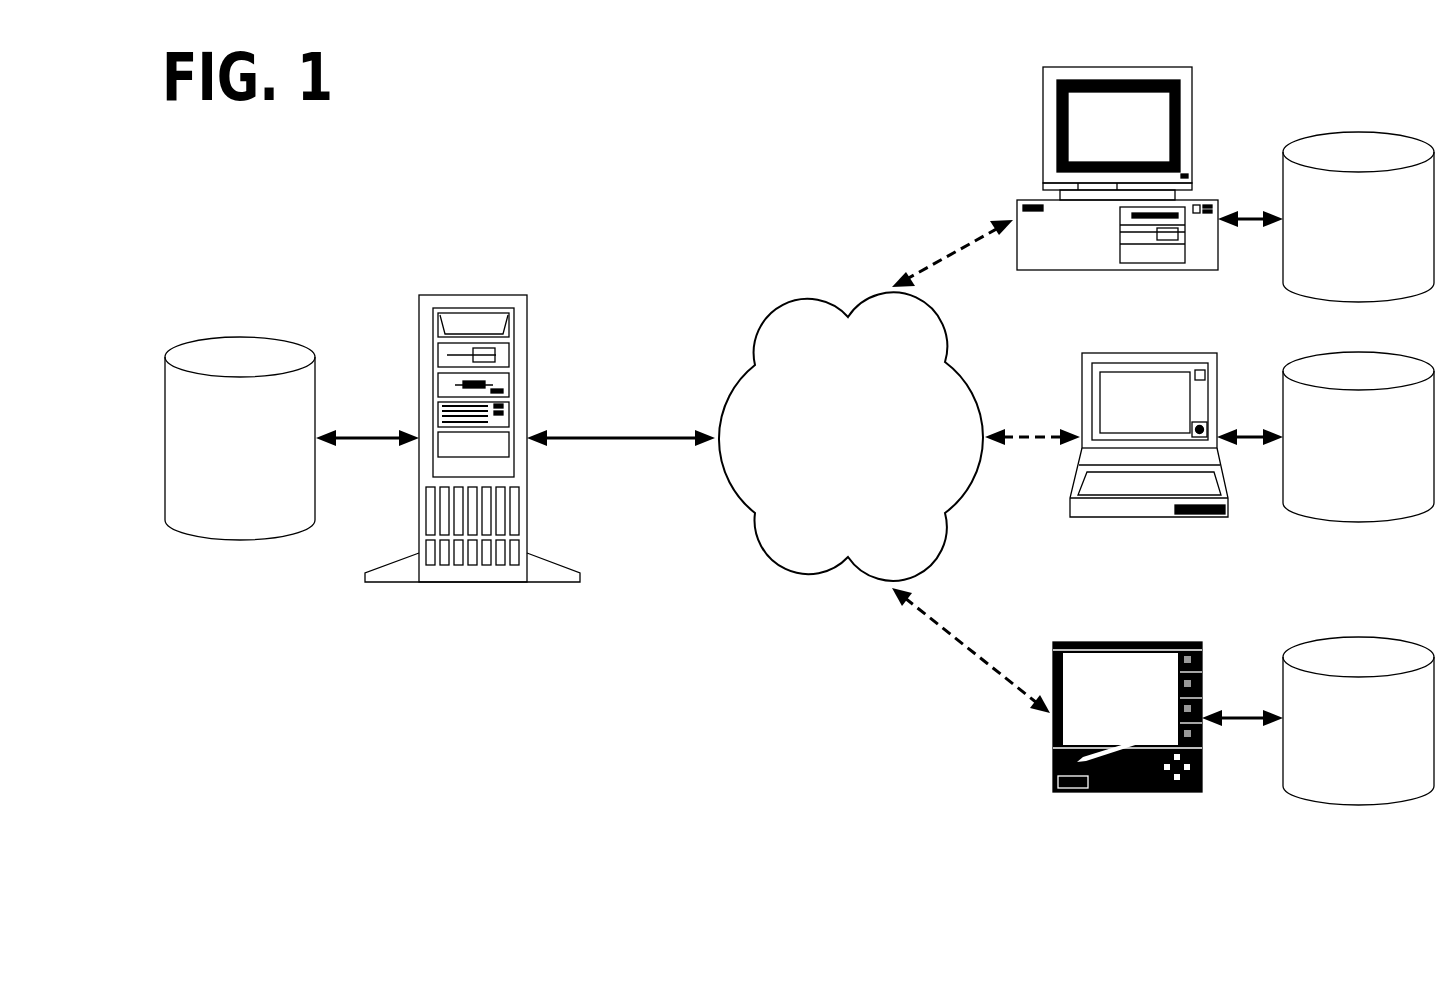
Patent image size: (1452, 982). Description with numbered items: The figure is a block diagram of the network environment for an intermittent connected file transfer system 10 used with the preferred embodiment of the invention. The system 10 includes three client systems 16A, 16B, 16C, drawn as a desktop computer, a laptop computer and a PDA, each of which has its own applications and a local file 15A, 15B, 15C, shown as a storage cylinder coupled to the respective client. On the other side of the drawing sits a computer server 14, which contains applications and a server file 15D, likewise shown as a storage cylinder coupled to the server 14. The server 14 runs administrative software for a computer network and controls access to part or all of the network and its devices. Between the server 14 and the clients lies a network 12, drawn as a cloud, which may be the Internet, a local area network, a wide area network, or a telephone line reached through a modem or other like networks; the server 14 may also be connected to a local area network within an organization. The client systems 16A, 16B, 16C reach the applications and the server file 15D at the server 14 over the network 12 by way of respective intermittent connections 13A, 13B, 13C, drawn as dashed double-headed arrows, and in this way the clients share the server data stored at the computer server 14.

The intermittent connected file transfer system 10 is at (560, 170).
The network 12 is at (812, 287).
The intermittent connection 13A is at (987, 235).
The intermittent connection 13B is at (1067, 430).
The intermittent connection 13C is at (935, 620).
The computer server 14 is at (473, 295).
The local file 15A is at (1358, 132).
The local file 15B is at (1360, 350).
The local file 15C is at (1358, 637).
The server file 15D is at (238, 336).
The client system 16A is at (1117, 66).
The client system 16B is at (1150, 353).
The client system 16C is at (1128, 641).